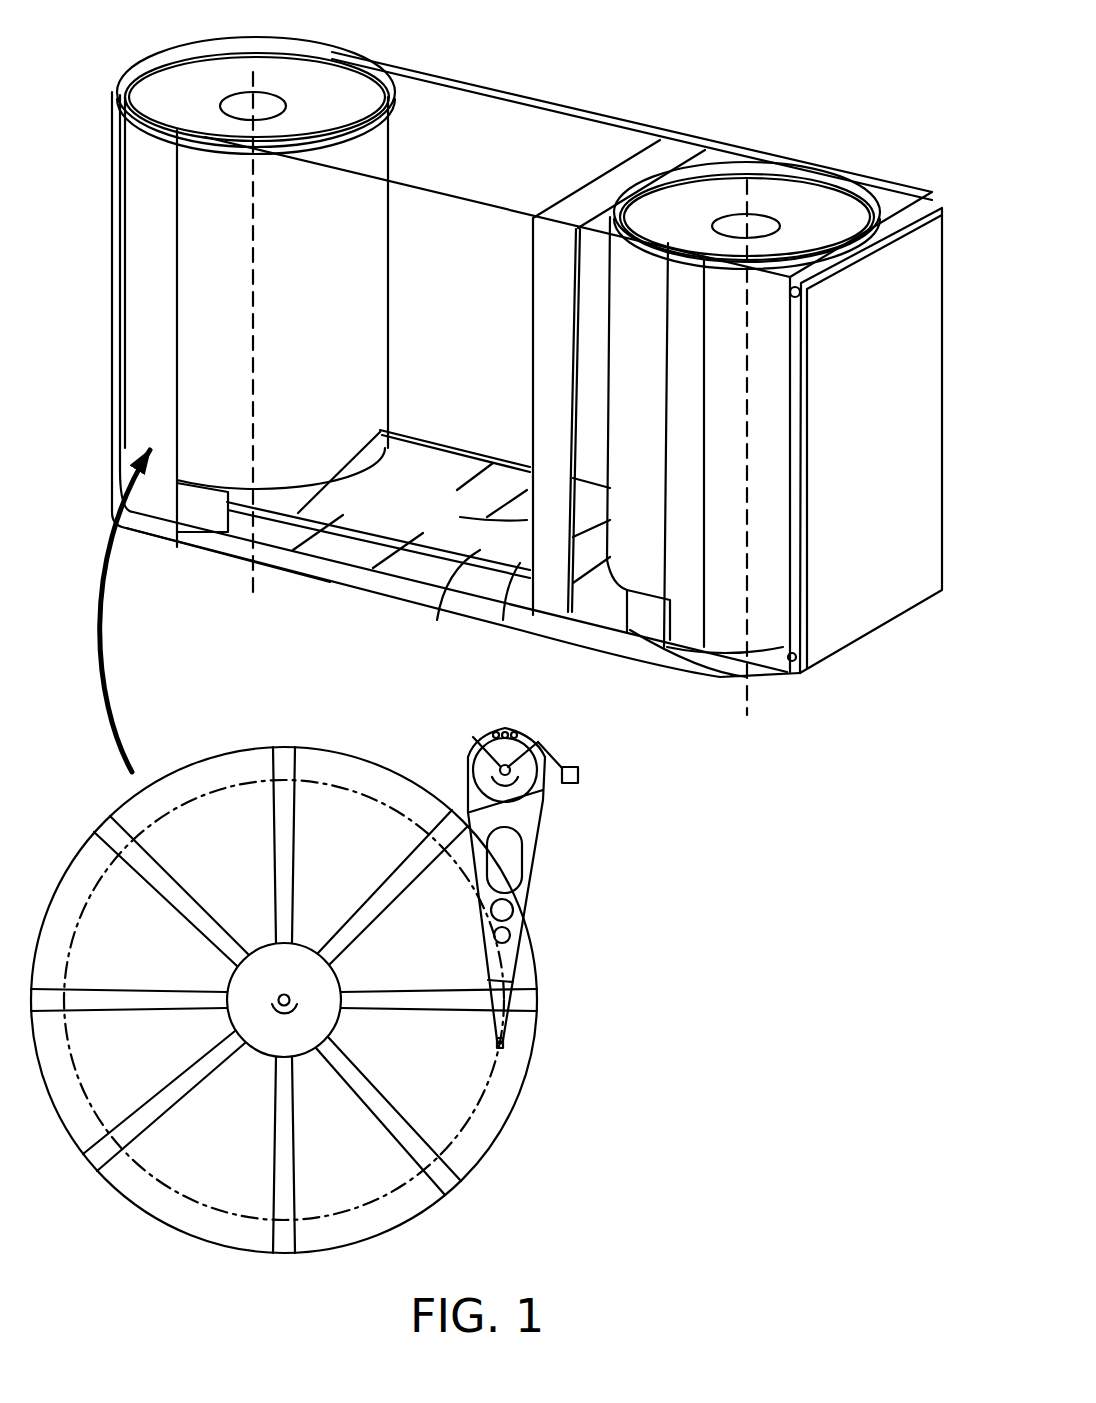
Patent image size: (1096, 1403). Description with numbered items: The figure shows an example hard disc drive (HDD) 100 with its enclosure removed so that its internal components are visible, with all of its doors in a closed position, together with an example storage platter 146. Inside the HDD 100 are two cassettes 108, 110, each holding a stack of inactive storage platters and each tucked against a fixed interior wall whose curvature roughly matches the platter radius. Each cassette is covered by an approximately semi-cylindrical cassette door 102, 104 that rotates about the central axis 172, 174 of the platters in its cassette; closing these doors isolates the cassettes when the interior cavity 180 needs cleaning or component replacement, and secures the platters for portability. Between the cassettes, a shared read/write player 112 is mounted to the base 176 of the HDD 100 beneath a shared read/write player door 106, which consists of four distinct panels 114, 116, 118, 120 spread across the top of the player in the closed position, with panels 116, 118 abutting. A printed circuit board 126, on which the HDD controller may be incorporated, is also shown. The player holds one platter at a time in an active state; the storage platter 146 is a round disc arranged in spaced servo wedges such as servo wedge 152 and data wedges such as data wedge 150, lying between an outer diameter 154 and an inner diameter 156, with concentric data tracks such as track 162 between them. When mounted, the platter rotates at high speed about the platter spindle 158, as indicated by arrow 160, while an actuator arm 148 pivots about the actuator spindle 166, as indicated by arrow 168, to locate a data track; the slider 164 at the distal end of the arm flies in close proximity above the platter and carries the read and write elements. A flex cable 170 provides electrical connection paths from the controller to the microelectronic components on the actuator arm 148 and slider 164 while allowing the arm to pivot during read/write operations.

The hard disc drive 100 is at (753, 89).
The cassette door 102 is at (295, 299).
The cassette door 104 is at (608, 388).
The shared read/write player door 106 is at (405, 499).
The cassette 108 is at (409, 114).
The cassette 110 is at (824, 157).
The shared read/write player 112 is at (419, 579).
The panel 114 is at (313, 533).
The panel 116 is at (377, 548).
The panel 118 is at (450, 552).
The panel 120 is at (515, 563).
The printed circuit board 126 is at (852, 463).
The storage platter 146 is at (202, 1145).
The actuator arm 148 is at (522, 937).
The data wedge 150 is at (176, 1240).
The servo wedge 152 is at (456, 1193).
The outer diameter 154 is at (417, 783).
The inner diameter 156 is at (230, 984).
The platter spindle 158 is at (280, 993).
The arrow 160 is at (298, 1010).
The data track 162 is at (470, 1112).
The slider 164 is at (497, 1043).
The actuator spindle 166 is at (483, 737).
The arrow 168 is at (536, 740).
The flex cable 170 is at (603, 851).
The central axis 172 is at (253, 288).
The central axis 174 is at (743, 457).
The base 176 is at (550, 639).
The interior cavity 180 is at (436, 389).